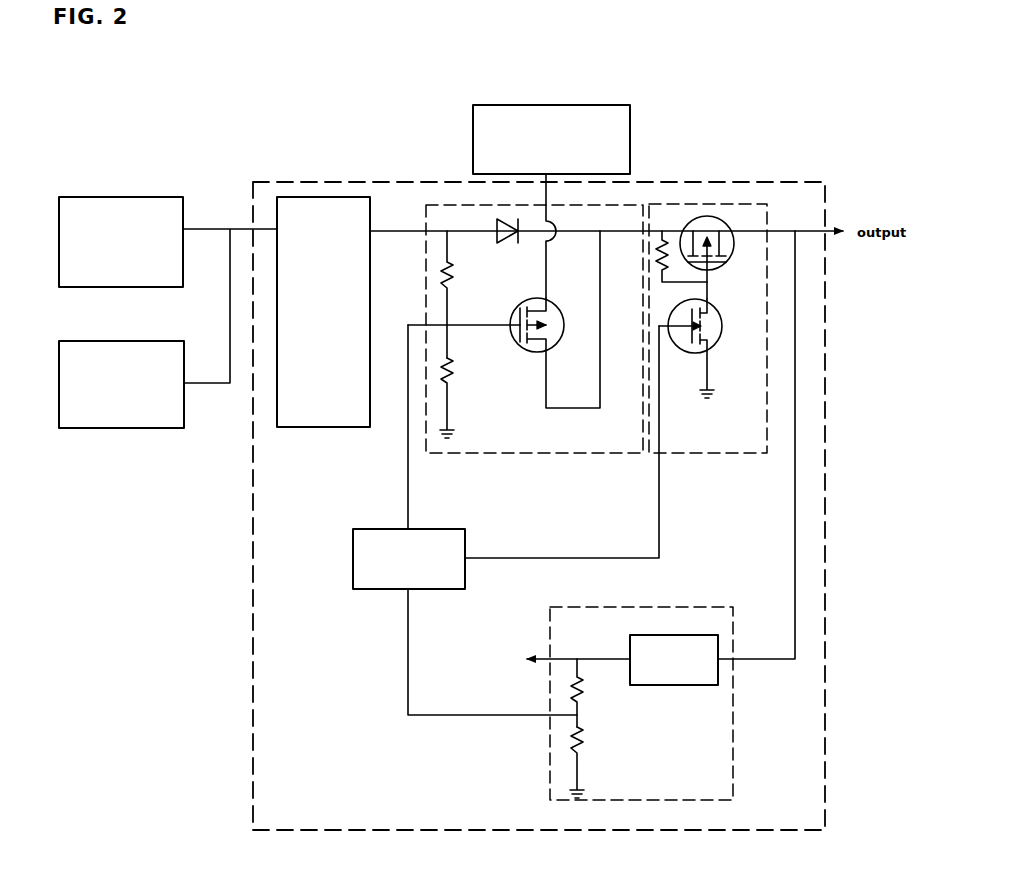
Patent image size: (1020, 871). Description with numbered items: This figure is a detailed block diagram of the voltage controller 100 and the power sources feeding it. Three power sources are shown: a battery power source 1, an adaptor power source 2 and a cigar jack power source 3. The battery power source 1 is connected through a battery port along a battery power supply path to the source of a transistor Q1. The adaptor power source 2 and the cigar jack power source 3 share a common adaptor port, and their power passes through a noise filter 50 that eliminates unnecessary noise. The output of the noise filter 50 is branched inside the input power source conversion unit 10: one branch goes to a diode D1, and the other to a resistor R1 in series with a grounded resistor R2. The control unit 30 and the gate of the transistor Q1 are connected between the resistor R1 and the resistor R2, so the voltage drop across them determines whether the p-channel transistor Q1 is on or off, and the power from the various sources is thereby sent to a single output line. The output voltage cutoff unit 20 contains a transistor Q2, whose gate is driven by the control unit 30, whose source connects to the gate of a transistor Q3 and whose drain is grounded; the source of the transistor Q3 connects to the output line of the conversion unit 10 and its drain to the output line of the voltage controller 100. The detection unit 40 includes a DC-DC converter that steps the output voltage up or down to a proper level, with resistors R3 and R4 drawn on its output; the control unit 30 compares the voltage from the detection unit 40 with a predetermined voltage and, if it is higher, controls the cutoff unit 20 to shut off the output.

The battery power source 1 is at (630, 137).
The adaptor power source 2 is at (121, 197).
The cigar jack power source 3 is at (121, 428).
The voltage controller 100 is at (396, 182).
The noise filter 50 is at (323, 427).
The input power source conversion unit 10 is at (525, 356).
The output voltage cutoff unit 20 is at (708, 356).
The control unit 30 is at (353, 558).
The detection unit 40 is at (605, 703).
The diode D1 is at (493, 226).
The resistor R1 is at (461, 294).
The resistor R2 is at (461, 398).
The resistor R3 is at (594, 693).
The resistor R4 is at (593, 762).
The transistor Q1 is at (549, 319).
The transistor Q2 is at (708, 347).
The transistor Q3 is at (717, 240).